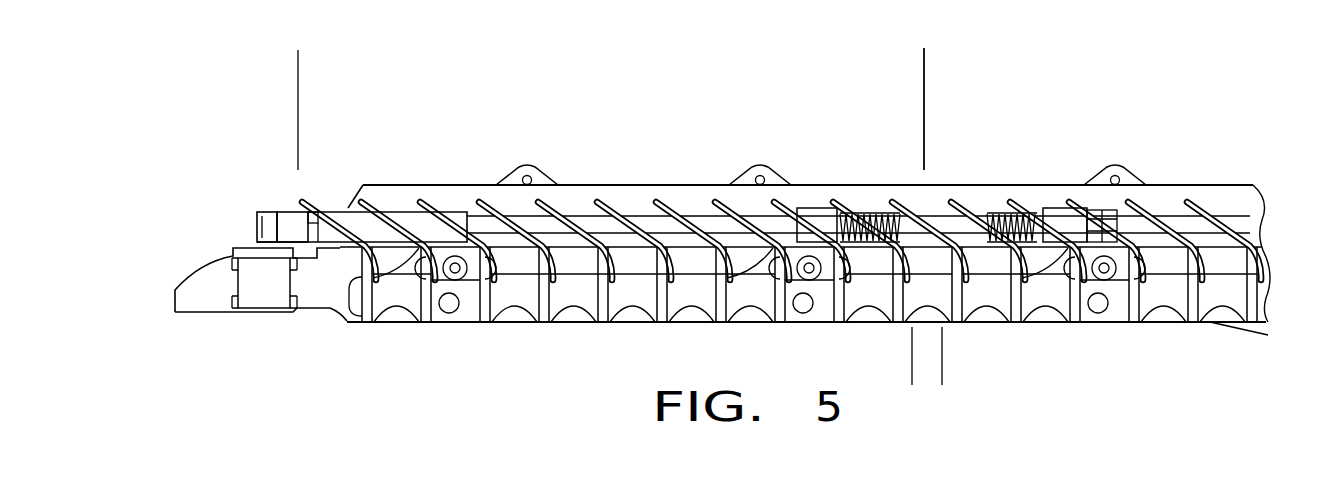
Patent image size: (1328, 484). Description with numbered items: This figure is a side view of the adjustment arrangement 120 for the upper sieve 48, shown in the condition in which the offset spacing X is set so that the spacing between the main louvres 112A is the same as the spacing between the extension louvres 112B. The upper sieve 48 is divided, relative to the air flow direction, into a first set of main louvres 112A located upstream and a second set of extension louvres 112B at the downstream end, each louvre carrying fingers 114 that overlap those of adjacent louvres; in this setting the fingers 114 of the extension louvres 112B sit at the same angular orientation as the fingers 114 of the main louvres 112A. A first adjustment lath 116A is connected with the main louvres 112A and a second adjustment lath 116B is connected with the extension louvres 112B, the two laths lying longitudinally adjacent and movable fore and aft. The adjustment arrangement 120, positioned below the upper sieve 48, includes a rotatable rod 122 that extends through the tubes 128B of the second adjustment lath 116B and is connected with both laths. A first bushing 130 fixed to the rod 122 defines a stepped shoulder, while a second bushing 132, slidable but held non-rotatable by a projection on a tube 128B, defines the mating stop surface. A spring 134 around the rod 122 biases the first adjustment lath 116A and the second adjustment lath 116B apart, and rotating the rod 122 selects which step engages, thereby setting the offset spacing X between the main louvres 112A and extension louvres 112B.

The upper sieve 48 is at (342, 356).
The main louvres 112A is at (1292, 64).
The extension louvres 112B is at (924, 64).
The fingers 114 is at (673, 187).
The first adjustment lath 116A is at (1171, 302).
The second adjustment lath 116B is at (522, 302).
The adjustment arrangement 120 is at (230, 229).
The rotatable elongate element 122 is at (528, 170).
The tubes 128B is at (453, 187).
The first bushing 130 is at (330, 208).
The second bushing 132 is at (400, 207).
The spring 134 is at (867, 185).
The offset spacing X is at (975, 373).